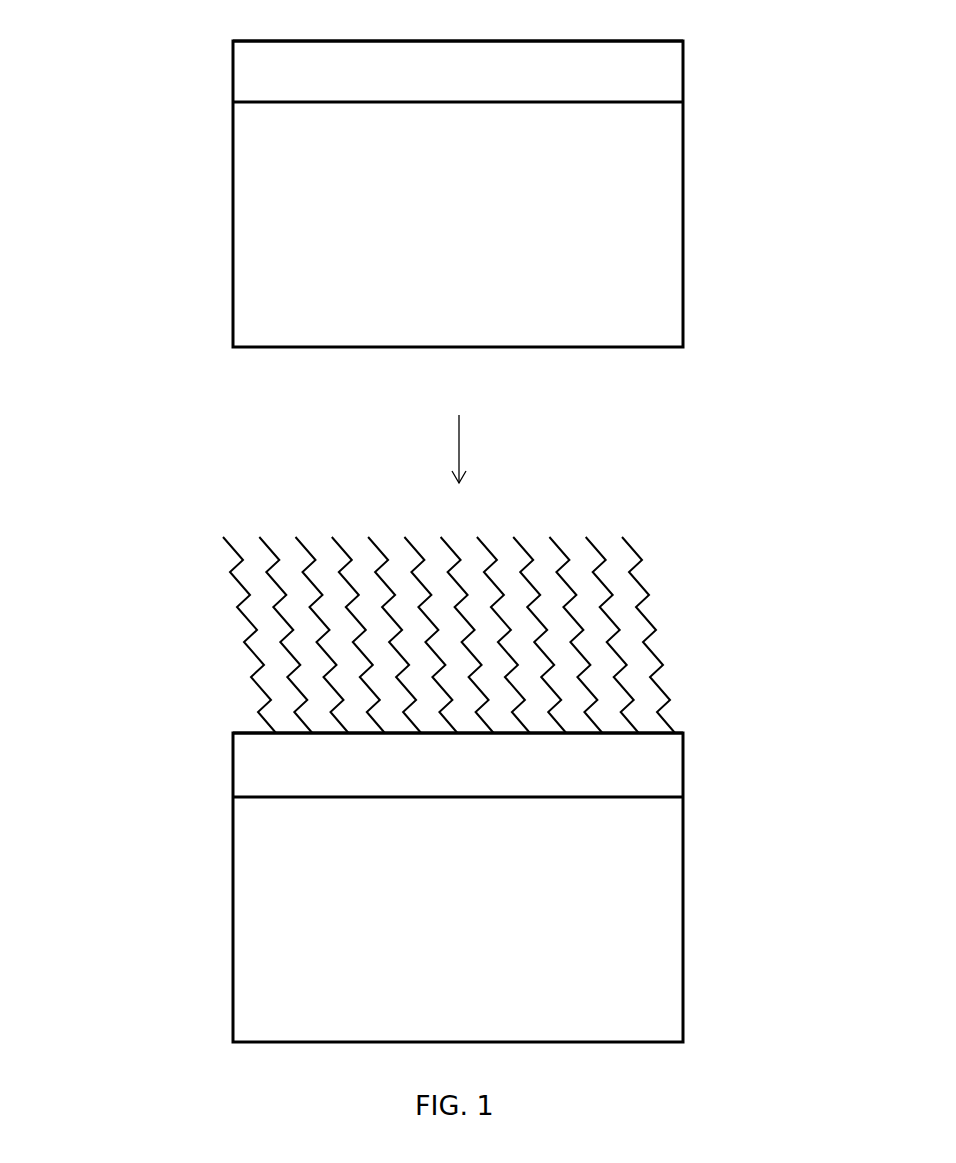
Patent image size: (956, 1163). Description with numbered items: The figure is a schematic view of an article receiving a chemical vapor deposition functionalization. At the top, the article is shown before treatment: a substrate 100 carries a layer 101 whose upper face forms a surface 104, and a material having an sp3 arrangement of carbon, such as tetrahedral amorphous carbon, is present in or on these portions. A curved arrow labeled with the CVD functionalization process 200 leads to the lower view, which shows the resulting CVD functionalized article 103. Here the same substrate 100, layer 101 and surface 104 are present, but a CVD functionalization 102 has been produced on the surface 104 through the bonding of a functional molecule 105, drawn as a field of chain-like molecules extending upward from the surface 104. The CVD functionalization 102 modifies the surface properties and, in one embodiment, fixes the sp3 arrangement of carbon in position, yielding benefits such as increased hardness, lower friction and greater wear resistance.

The substrate 100 is at (485, 230).
The layer 101 is at (702, 42).
The CVD functionalization 102 is at (700, 537).
The CVD functionalized article 103 is at (105, 537).
The surface 104 is at (232, 41).
The functional molecule 105 is at (632, 547).
The CVD functionalization process 200 is at (263, 438).